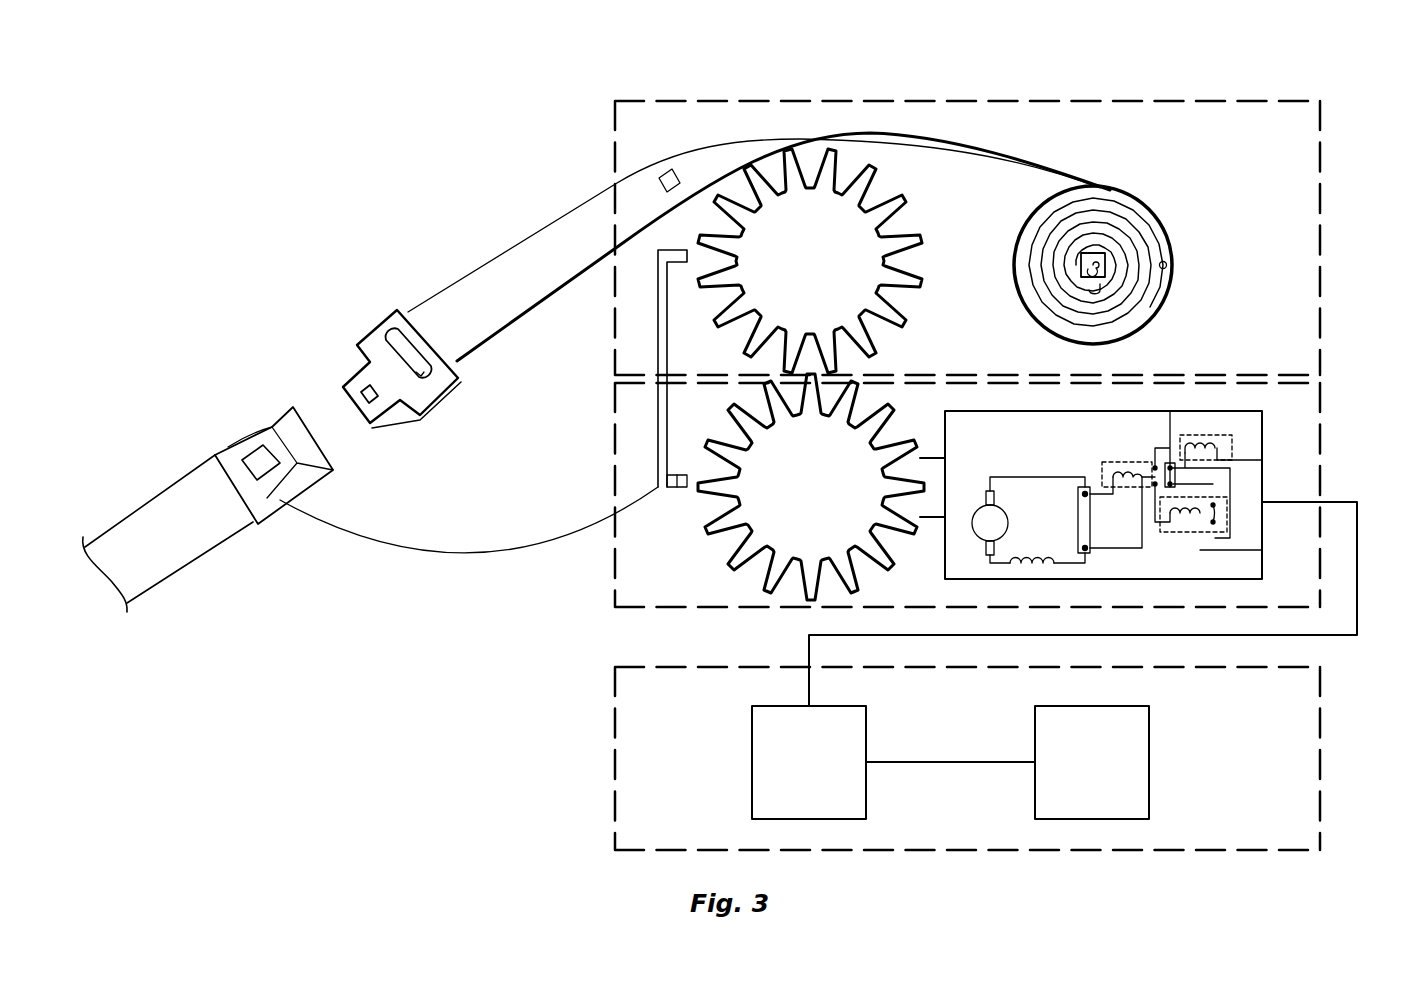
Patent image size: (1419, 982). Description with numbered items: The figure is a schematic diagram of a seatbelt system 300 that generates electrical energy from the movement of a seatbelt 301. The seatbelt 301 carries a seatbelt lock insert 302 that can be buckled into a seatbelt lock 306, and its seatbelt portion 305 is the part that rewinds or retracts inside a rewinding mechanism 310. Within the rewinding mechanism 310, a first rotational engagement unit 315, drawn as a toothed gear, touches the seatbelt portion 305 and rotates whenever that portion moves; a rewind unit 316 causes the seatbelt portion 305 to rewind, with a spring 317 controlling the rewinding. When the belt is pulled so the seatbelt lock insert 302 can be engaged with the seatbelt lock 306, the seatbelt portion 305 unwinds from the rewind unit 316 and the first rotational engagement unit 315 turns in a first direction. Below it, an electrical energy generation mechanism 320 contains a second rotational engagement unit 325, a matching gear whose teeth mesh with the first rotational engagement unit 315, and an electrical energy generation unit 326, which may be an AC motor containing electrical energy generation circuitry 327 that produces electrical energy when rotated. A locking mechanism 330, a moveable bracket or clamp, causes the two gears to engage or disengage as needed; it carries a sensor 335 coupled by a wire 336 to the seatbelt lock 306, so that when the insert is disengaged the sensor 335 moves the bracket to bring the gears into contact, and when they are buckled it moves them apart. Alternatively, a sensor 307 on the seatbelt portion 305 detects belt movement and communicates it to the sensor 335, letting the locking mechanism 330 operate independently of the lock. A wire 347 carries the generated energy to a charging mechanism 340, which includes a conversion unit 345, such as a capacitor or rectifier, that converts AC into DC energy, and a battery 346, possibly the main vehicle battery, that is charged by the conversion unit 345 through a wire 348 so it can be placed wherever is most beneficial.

The seatbelt system 300 is at (1248, 69).
The seatbelt 301 is at (528, 232).
The seatbelt lock insert 302 is at (373, 318).
The seatbelt portion 305 is at (838, 144).
The seatbelt lock 306 is at (272, 398).
The sensor 307 is at (668, 176).
The rewinding mechanism 310 is at (1313, 129).
The first rotational engagement unit 315 is at (827, 266).
The rewind unit 316 is at (1163, 261).
The spring 317 is at (1098, 294).
The electrical energy generation mechanism 320 is at (1313, 411).
The second rotational engagement unit 325 is at (828, 494).
The electrical energy generation unit 326 is at (1001, 447).
The electrical energy generation circuitry 327 is at (1075, 564).
The locking mechanism 330 is at (658, 451).
The sensor 335 is at (672, 490).
The wire 336 is at (536, 558).
The charging mechanism 340 is at (1290, 705).
The conversion unit 345 is at (826, 773).
The battery 346 is at (1109, 773).
The wire 347 is at (1362, 570).
The wire 348 is at (914, 761).